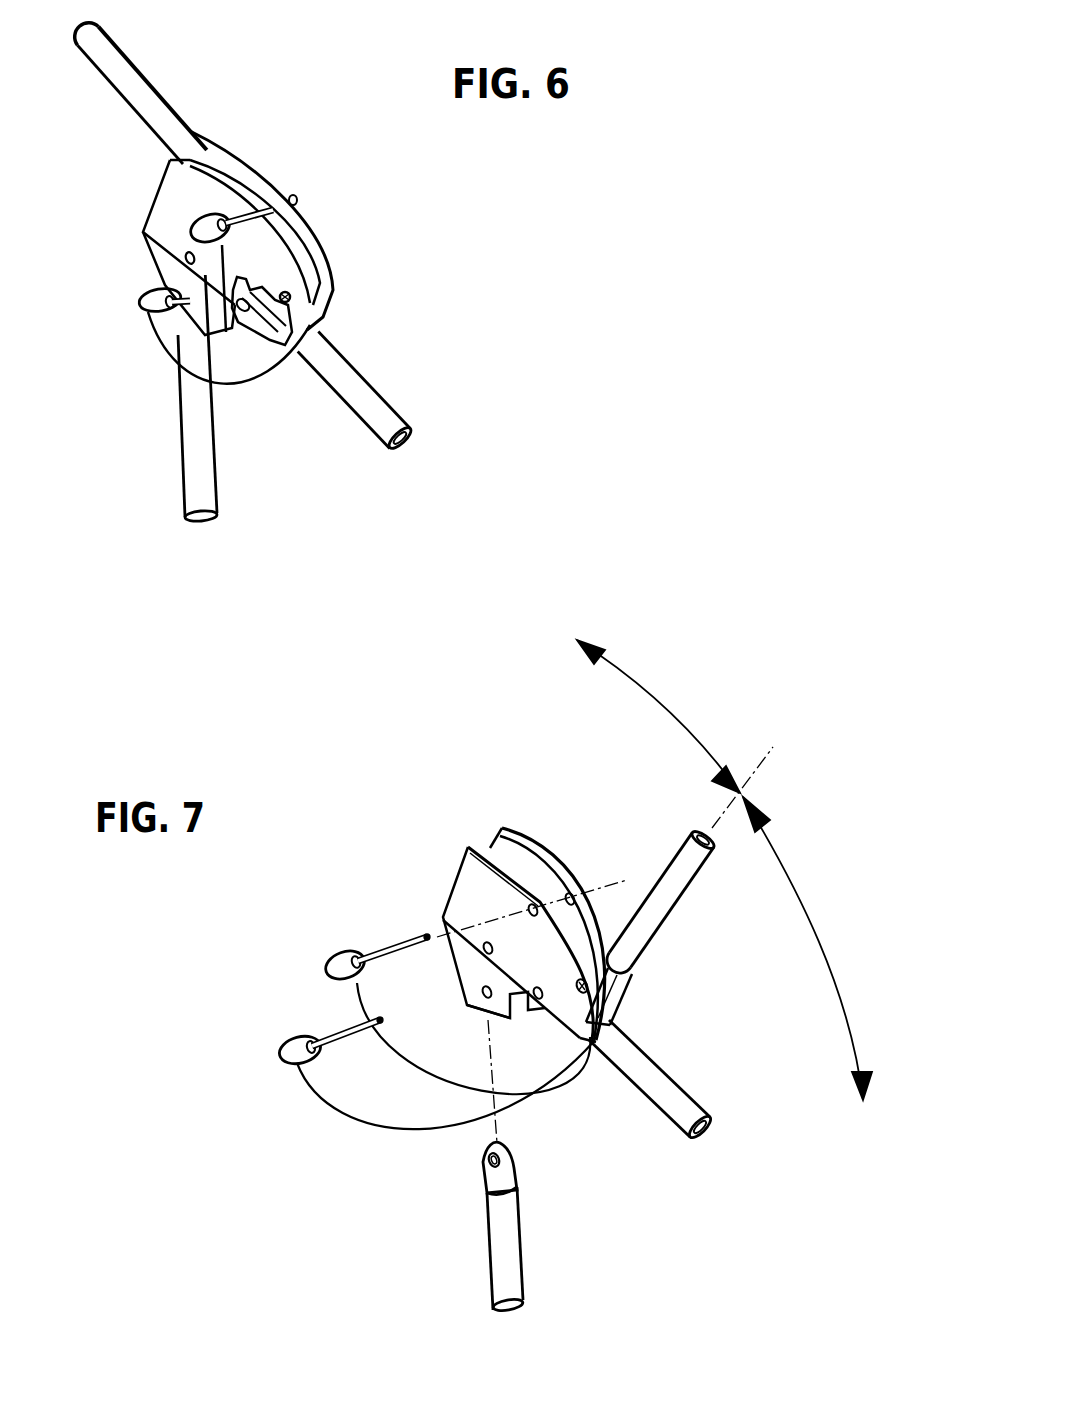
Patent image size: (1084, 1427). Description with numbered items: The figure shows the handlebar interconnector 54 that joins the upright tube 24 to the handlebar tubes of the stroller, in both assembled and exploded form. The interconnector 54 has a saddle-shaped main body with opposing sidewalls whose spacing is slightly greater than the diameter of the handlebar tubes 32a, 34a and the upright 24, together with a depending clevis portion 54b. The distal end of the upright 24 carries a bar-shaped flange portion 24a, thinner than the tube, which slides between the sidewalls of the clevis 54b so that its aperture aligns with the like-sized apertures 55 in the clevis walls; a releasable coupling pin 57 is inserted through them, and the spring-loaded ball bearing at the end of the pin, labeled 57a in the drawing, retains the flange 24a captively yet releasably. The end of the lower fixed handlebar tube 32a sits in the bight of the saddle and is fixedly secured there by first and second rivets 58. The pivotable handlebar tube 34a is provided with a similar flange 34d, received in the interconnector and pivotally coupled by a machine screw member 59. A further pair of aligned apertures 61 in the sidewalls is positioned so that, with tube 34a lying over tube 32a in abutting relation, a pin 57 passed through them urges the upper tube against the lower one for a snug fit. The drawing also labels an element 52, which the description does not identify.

In FIG. 6, the upright tube 24 is at (178, 479).
In FIG. 7, the upright tube 24 is at (525, 1250).
In FIG. 7, the bar-shaped flange portion 24a is at (512, 1160).
In FIG. 6, the handlebar tube 32a is at (386, 400).
In FIG. 7, the handlebar tube 32a is at (650, 1052).
In FIG. 6, the handlebar tube 34a is at (132, 70).
In FIG. 7, the handlebar tube 34a is at (675, 912).
In FIG. 7, the flange 34d is at (632, 997).
In FIG. 6, the mounting hole 52 is at (186, 253).
In FIG. 6, the handlebar interconnector 54 is at (108, 235).
In FIG. 7, the handlebar interconnector 54 is at (408, 812).
In FIG. 7, the clevis portion 54b is at (467, 984).
In FIG. 7, the apertures 55 is at (467, 1017).
In FIG. 6, the releasable coupling pin 57 is at (282, 198).
In FIG. 7, the releasable coupling pin 57 is at (360, 956).
In FIG. 7, the pin shaft 57a is at (424, 934).
In FIG. 6, the rivets 58 is at (268, 382).
In FIG. 7, the machine screw member 59 is at (583, 1034).
In FIG. 7, the aligned apertures 61 is at (534, 905).